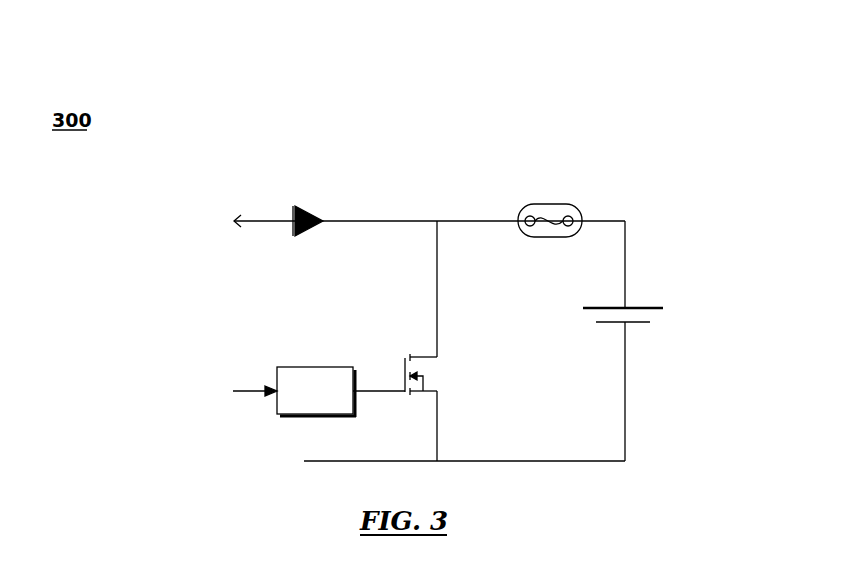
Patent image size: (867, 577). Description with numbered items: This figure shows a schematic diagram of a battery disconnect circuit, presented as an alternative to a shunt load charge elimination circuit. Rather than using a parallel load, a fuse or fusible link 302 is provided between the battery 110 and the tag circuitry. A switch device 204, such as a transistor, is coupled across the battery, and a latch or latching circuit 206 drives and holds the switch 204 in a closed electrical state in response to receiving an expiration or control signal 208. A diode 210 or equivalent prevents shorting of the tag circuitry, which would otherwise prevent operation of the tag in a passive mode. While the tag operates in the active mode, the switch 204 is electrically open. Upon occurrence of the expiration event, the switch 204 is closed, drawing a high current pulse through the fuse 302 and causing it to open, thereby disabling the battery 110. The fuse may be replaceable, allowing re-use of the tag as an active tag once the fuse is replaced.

The diode 210 is at (318, 206).
The fuse or fusible link 302 is at (552, 204).
The battery 110 is at (648, 308).
The switch device 204 is at (424, 381).
The latch or latching circuit 206 is at (322, 367).
The expiration or control signal 208 is at (250, 388).